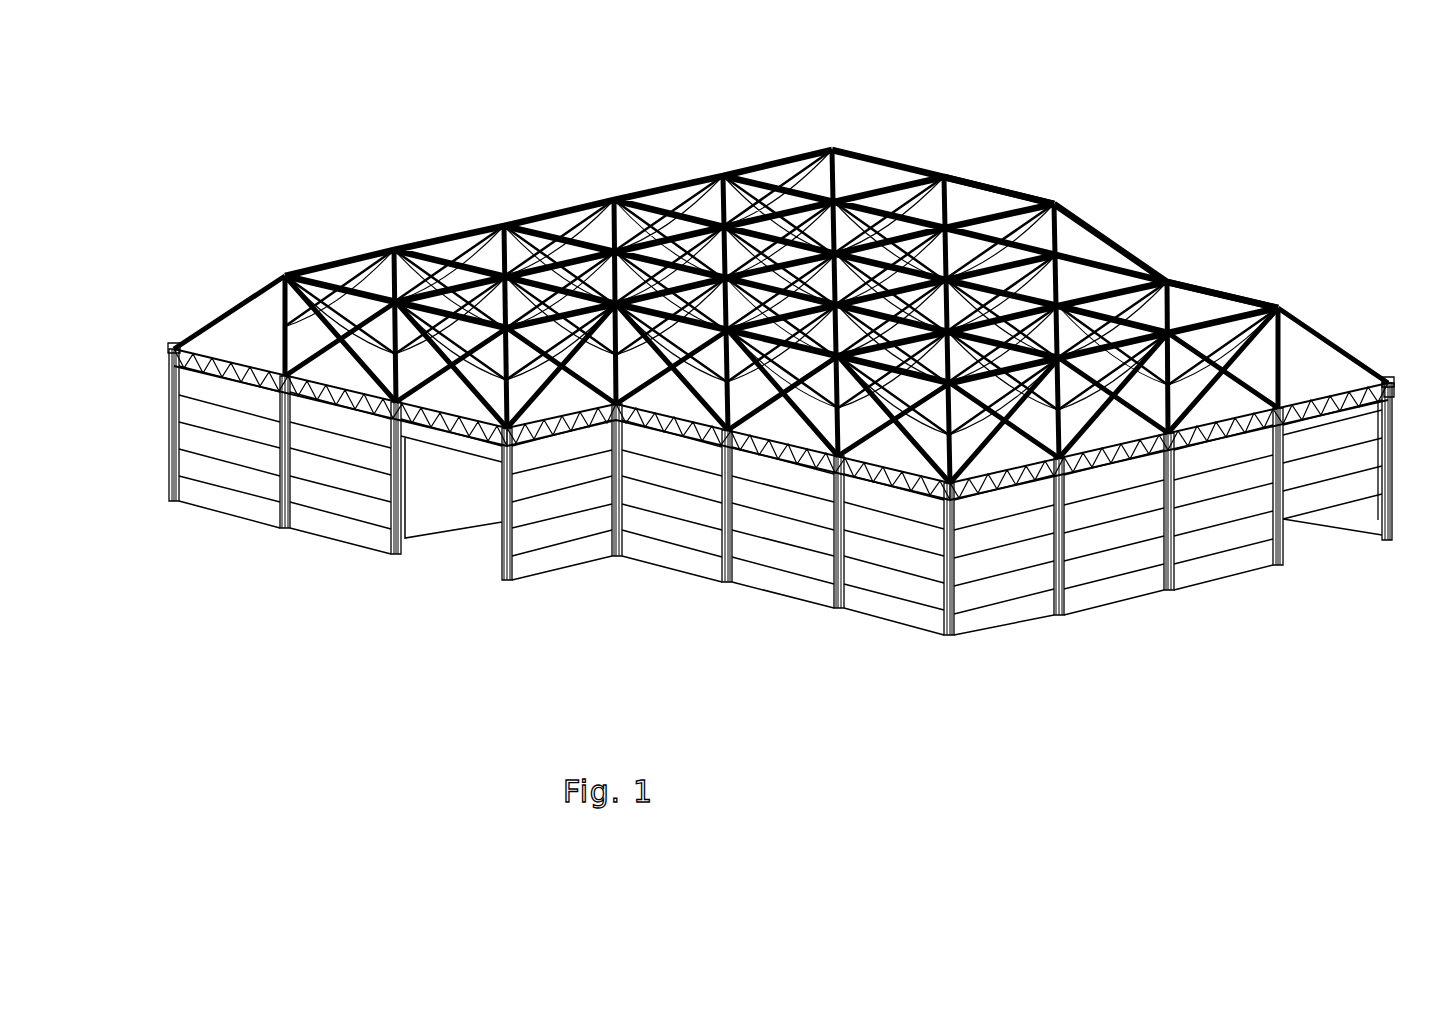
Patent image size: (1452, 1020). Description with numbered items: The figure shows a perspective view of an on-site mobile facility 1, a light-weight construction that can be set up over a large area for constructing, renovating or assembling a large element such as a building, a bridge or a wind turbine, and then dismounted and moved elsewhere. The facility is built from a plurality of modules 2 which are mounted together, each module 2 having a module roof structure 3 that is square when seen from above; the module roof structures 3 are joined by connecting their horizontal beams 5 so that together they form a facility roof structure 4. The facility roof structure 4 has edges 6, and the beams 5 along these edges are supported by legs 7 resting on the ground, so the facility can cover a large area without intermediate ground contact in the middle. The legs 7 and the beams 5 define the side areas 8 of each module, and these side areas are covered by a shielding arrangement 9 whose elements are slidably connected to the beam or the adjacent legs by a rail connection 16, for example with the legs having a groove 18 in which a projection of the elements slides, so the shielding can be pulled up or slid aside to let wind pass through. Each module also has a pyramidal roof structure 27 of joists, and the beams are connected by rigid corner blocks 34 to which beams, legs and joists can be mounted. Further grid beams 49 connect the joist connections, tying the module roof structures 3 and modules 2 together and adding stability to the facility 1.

The on-site mobile facility 1 is at (779, 374).
The module 2 is at (185, 375).
The module roof structure 3 is at (781, 287).
The facility roof structure 4 is at (245, 358).
The horizontal beam 5 is at (985, 550).
The edge 6 is at (205, 360).
The leg 7 is at (172, 500).
The side area 8 is at (222, 512).
The shielding arrangement 9 is at (182, 436).
The rail connection 16 is at (1377, 416).
The groove 18 is at (1376, 467).
The pyramidal roof structure 27 is at (1285, 318).
The corner block 34 is at (1395, 387).
The grid beam 49 is at (985, 180).